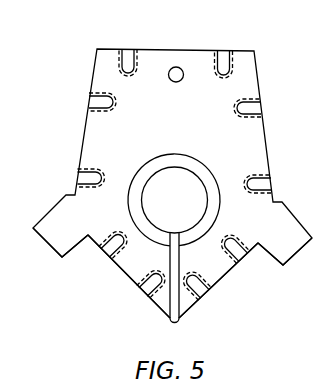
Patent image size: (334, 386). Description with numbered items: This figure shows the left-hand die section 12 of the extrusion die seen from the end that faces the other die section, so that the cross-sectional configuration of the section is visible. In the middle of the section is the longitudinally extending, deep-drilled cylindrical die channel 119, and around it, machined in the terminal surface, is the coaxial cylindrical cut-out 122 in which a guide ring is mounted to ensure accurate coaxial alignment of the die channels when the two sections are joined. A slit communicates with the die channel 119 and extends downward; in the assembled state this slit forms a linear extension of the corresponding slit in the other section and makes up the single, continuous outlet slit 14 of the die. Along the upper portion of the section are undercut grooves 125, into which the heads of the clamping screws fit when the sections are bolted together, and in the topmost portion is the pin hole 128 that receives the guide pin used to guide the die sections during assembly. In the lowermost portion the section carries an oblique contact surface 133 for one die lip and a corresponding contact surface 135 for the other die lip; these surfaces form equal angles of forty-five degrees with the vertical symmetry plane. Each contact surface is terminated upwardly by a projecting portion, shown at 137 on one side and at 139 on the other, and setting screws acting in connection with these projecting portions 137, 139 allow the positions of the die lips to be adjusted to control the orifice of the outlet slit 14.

The die section 12 is at (255, 50).
The outlet slit 14 is at (178, 317).
The die channel 119 is at (192, 182).
The cylindrical cut-out 122 is at (197, 163).
The undercut groove 125 is at (127, 50).
The pin hole 128 is at (176, 66).
The oblique contact surface 133 is at (125, 273).
The contact surface 135 is at (222, 278).
The projecting portion 137 is at (34, 229).
The projecting portion 139 is at (312, 238).